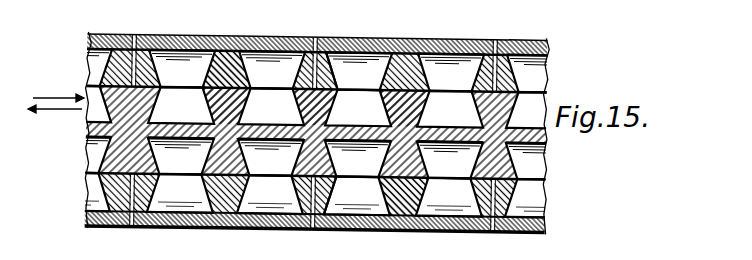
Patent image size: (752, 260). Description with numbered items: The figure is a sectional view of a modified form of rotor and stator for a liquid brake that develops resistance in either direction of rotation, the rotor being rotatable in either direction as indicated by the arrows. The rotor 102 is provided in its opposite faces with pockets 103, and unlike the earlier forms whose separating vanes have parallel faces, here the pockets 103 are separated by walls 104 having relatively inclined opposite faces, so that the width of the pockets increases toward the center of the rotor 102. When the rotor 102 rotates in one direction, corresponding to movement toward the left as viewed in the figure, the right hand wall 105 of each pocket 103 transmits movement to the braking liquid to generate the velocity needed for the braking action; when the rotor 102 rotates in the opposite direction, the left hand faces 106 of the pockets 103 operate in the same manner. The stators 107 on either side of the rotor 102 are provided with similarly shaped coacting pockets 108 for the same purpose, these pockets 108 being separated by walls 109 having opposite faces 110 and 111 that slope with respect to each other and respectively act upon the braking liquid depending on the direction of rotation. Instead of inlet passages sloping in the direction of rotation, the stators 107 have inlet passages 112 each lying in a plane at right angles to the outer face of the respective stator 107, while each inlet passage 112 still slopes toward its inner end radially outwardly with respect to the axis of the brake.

The rotor 102 is at (546, 137).
The pockets 103 is at (449, 135).
The walls 104 is at (384, 113).
The right hand wall 105 is at (295, 115).
The left hand faces 106 is at (247, 97).
The stators 107 is at (558, 29).
The pockets 108 is at (447, 62).
The walls 109 is at (227, 62).
The face 110 is at (380, 60).
The face 111 is at (342, 51).
The inlet passages 112 is at (136, 34).